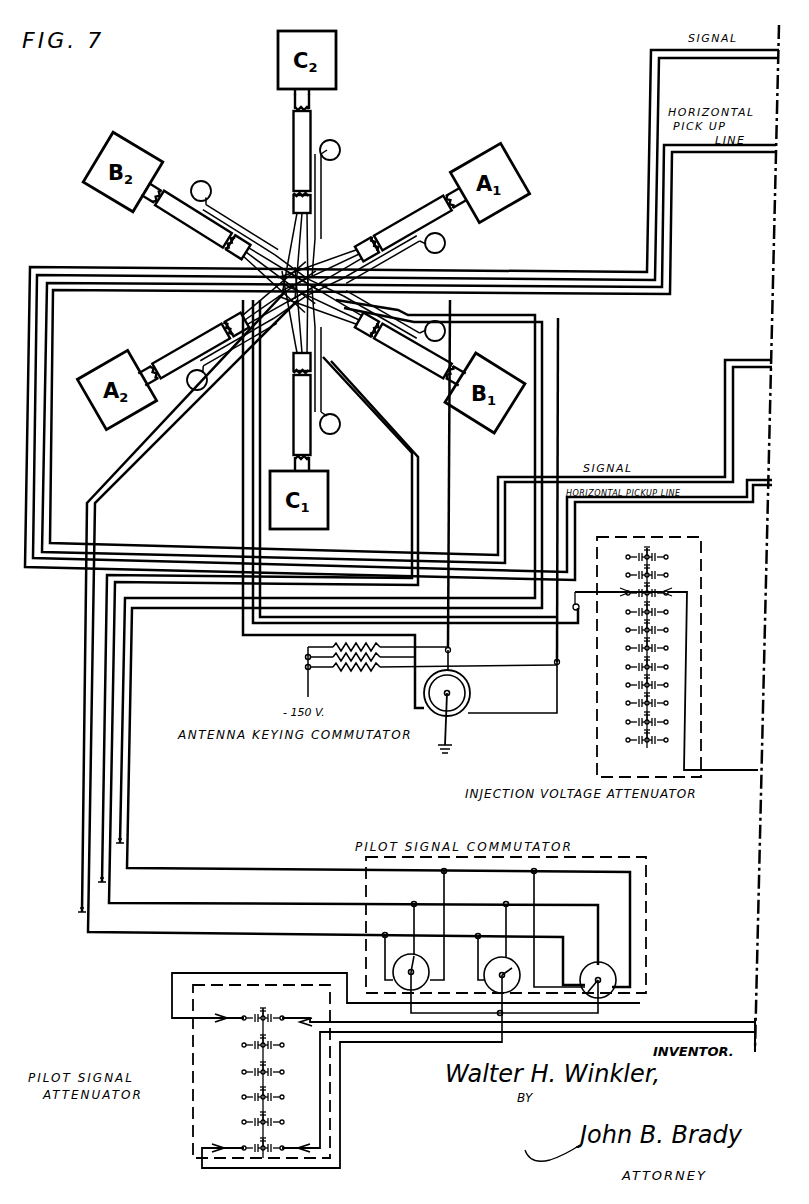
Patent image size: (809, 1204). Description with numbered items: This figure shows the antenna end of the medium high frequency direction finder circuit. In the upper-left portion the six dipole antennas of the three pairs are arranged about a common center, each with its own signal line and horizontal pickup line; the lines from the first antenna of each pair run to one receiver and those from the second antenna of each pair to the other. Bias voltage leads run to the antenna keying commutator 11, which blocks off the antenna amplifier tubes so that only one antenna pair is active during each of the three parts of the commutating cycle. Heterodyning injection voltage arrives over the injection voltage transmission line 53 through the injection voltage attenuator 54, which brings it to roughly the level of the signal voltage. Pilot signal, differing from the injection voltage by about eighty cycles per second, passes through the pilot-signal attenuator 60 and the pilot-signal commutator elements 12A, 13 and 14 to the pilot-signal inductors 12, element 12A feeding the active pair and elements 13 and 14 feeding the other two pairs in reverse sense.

The pilot-signal inductor 12 is at (342, 151).
The antenna keying commutator 11 is at (470, 716).
The injection voltage transmission line 53 is at (478, 632).
The injection voltage attenuator 54 is at (587, 735).
The pilot-signal attenuator 60 is at (191, 1044).
The pilot-signal commutator element 14 is at (415, 965).
The pilot-signal commutator element 13 is at (502, 967).
The pilot-signal commutator element 12A is at (595, 972).